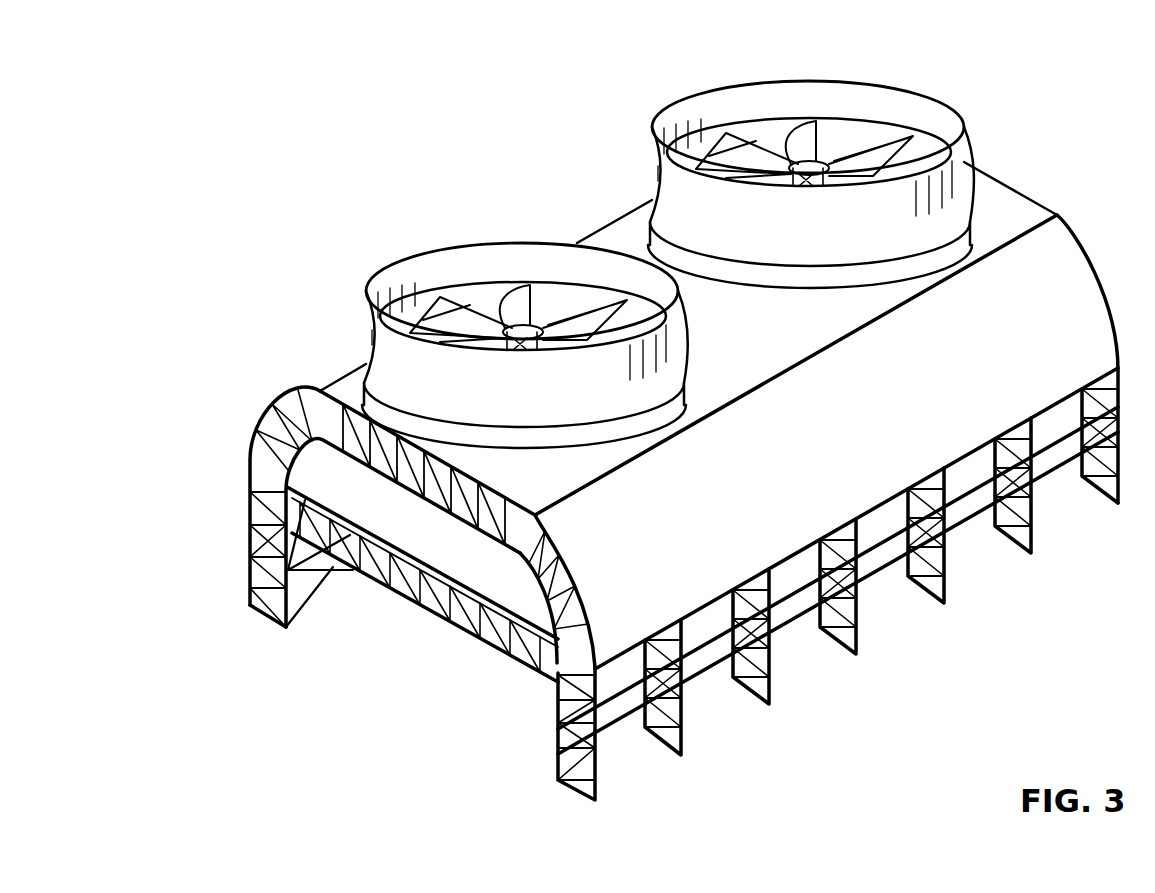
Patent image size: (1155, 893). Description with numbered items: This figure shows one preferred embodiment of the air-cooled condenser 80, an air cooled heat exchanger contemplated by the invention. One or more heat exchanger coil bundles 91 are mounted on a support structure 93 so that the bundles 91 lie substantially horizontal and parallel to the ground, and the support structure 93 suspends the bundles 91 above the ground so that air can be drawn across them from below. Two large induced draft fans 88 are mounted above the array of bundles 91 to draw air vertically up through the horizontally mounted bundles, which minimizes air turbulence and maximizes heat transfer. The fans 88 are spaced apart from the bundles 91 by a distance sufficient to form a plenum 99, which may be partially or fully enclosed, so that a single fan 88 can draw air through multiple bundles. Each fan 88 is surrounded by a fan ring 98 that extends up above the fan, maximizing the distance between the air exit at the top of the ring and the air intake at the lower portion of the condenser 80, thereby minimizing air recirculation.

The air-cooled condenser 80 is at (410, 126).
The induced draft fan 88 is at (440, 308).
The fan ring 98 is at (387, 355).
The plenum 99 is at (315, 467).
The support structure 93 is at (250, 544).
The heat exchanger coil bundle 91 is at (453, 580).